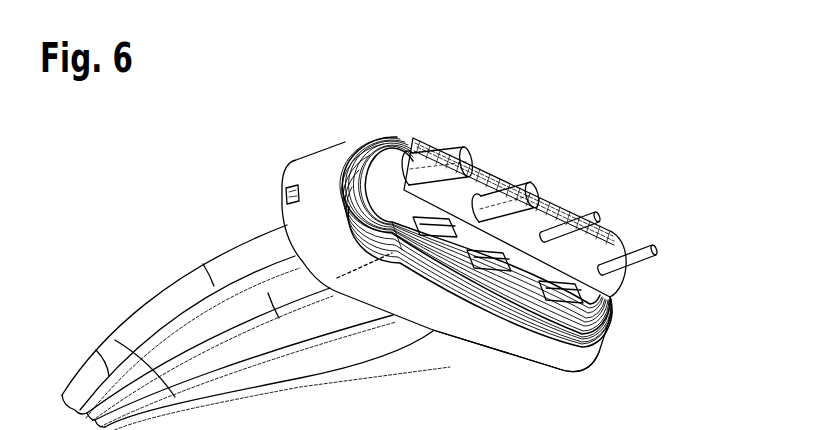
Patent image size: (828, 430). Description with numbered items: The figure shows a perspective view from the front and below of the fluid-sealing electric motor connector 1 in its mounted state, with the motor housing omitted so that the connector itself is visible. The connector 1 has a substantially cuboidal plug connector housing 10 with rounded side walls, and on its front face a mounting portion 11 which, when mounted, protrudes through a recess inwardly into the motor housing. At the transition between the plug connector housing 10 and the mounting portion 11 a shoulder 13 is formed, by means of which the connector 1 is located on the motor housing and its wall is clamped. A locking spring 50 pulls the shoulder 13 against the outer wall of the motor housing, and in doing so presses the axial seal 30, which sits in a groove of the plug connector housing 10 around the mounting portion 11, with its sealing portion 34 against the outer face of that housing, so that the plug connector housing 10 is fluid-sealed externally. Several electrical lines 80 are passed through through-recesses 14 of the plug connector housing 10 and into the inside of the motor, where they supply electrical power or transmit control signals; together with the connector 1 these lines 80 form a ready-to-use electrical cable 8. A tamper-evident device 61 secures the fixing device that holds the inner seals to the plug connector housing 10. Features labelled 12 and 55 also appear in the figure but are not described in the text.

The fluid-sealing electric motor connector 1 is at (334, 113).
The electrical cable 8 is at (136, 239).
The plug connector housing 10 is at (505, 352).
The mounting portion 11 is at (606, 250).
The contact pin 12 is at (540, 202).
The shoulder 13 is at (598, 346).
The through-recesses 14 is at (412, 238).
The axial seal 30 is at (388, 142).
The sealing portion 34 is at (302, 152).
The locking spring 50 is at (508, 164).
The terminal clip 55 is at (406, 245).
The tamper-evident device 61 is at (282, 195).
The electrical line 80 is at (108, 363).